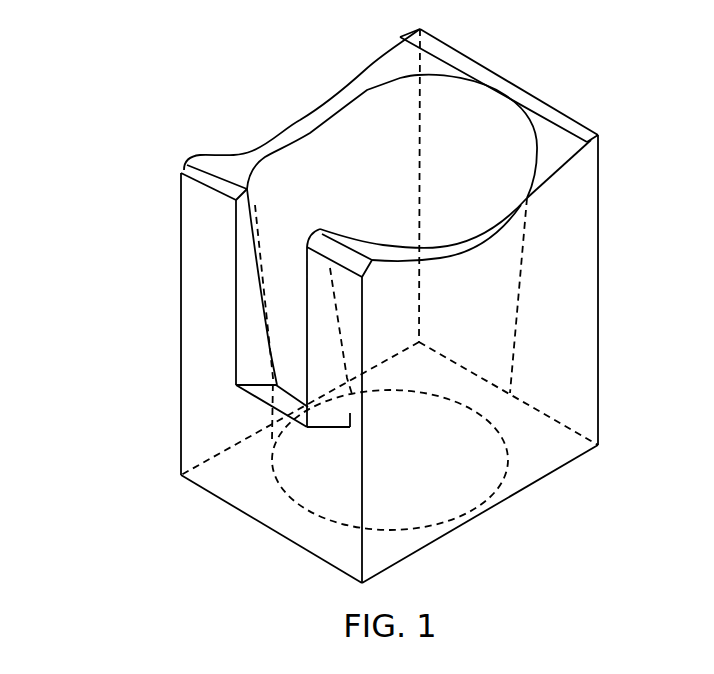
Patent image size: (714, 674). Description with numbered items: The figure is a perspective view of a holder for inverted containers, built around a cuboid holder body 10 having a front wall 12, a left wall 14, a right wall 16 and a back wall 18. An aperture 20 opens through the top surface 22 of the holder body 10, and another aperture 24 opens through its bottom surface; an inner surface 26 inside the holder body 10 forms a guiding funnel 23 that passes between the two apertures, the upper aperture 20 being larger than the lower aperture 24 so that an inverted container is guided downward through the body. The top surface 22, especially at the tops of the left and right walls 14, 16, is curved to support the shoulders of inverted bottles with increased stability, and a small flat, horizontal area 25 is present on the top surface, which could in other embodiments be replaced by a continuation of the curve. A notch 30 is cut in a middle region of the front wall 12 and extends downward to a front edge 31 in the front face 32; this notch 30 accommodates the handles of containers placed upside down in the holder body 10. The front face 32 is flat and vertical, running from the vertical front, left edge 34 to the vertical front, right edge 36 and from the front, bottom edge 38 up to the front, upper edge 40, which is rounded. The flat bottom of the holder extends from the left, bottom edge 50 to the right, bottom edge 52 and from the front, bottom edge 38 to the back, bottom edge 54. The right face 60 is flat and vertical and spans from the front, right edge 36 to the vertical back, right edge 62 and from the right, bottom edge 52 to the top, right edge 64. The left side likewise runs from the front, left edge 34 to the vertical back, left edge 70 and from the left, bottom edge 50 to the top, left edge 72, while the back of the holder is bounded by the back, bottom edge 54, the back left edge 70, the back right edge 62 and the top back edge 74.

The holder body 10 is at (90, 52).
The front wall 12 is at (178, 262).
The left wall 14 is at (303, 117).
The right wall 16 is at (452, 228).
The back wall 18 is at (517, 73).
The aperture 20 is at (353, 105).
The top surface 22 is at (237, 167).
The guiding funnel 23 is at (510, 362).
The aperture 24 is at (483, 512).
The flat, horizontal area 25 is at (547, 108).
The inner surface 26 is at (288, 172).
The notch 30 is at (234, 285).
The front edge 31 is at (260, 400).
The front face 32 is at (204, 344).
The front, left edge 34 is at (181, 197).
The front, right edge 36 is at (362, 552).
The front, bottom edge 38 is at (234, 508).
The front, upper edge 40 is at (203, 175).
The left, bottom edge 50 is at (210, 458).
The right, bottom edge 52 is at (567, 465).
The back, bottom edge 54 is at (562, 420).
The right face 60 is at (583, 310).
The back, right edge 62 is at (600, 238).
The top, right edge 64 is at (558, 172).
The back, left edge 70 is at (420, 60).
The top, left edge 72 is at (377, 63).
The top back edge 74 is at (448, 45).